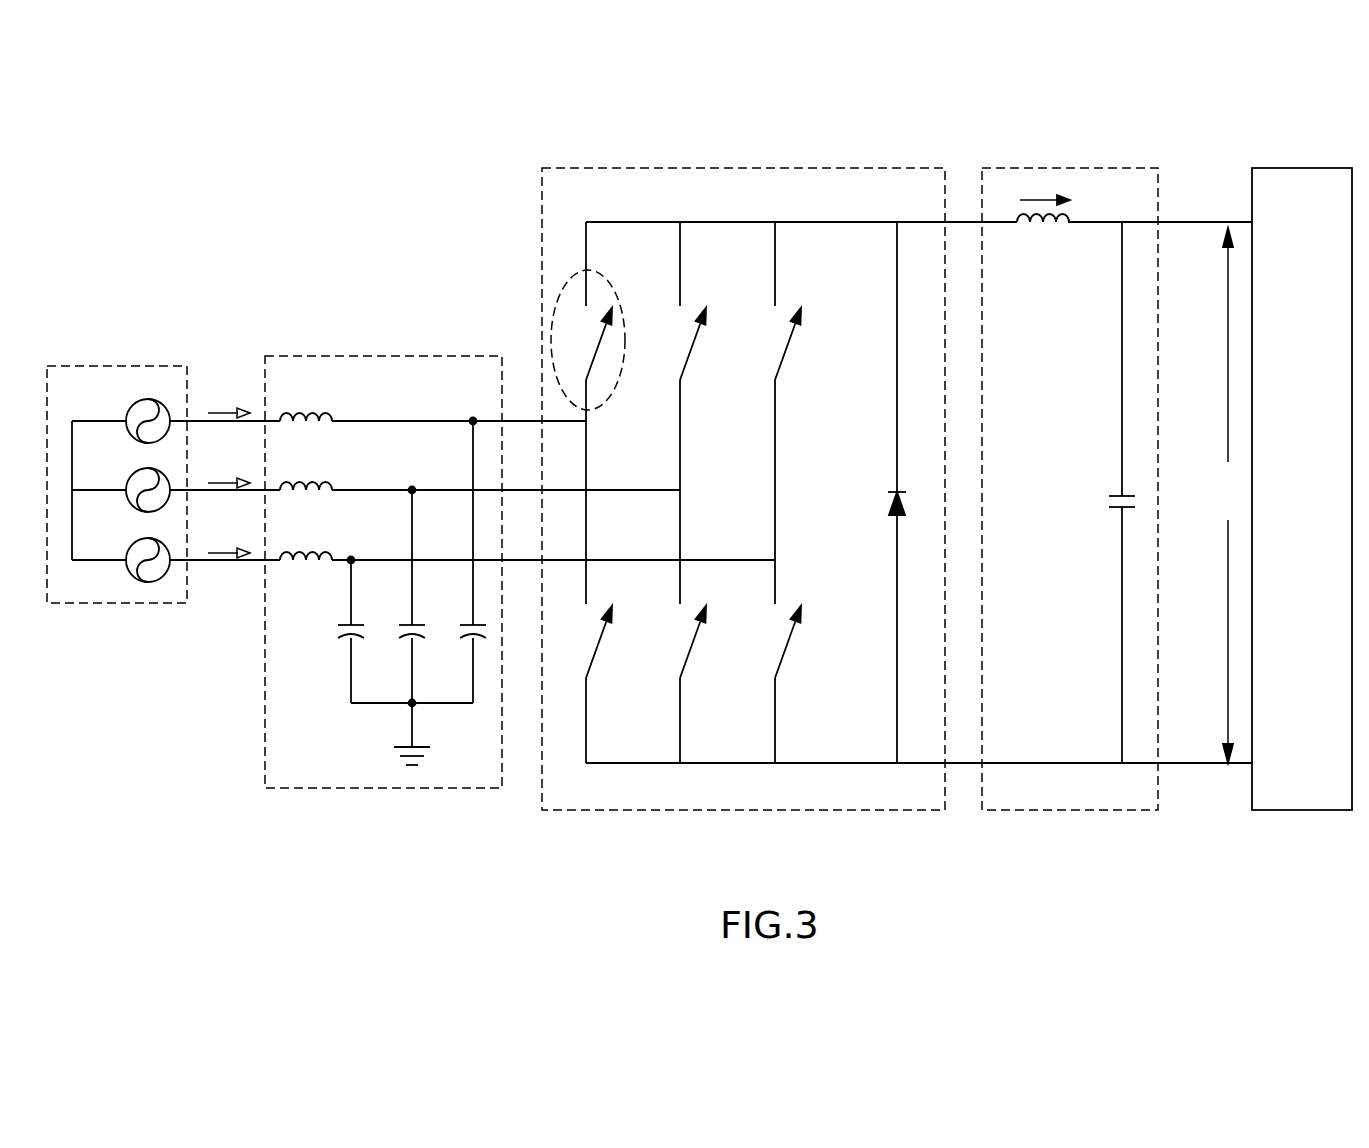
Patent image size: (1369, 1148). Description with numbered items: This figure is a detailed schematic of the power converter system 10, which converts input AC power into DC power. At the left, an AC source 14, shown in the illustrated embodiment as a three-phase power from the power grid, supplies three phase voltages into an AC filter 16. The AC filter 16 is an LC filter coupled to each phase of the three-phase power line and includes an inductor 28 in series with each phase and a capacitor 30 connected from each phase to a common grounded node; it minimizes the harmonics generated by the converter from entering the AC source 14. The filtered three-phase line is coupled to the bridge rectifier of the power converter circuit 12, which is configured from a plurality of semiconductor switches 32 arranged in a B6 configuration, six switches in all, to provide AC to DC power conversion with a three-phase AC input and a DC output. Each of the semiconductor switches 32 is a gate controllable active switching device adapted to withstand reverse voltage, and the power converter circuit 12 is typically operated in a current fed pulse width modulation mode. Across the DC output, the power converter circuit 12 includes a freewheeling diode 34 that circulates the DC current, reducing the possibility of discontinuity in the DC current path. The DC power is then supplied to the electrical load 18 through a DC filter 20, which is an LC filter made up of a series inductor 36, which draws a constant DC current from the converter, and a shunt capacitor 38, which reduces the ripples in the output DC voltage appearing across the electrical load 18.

The power converter system 10 is at (163, 111).
The power converter circuit 12 is at (745, 168).
The AC source 14 is at (117, 366).
The AC filter 16 is at (382, 356).
The electrical load 18 is at (1300, 168).
The DC filter 20 is at (1067, 168).
The inductor 28 is at (332, 413).
The capacitor 30 is at (340, 625).
The semiconductor switches 32 is at (618, 302).
The freewheeling diode 34 is at (892, 490).
The inductor 36 is at (1072, 212).
The capacitor 38 is at (1110, 510).